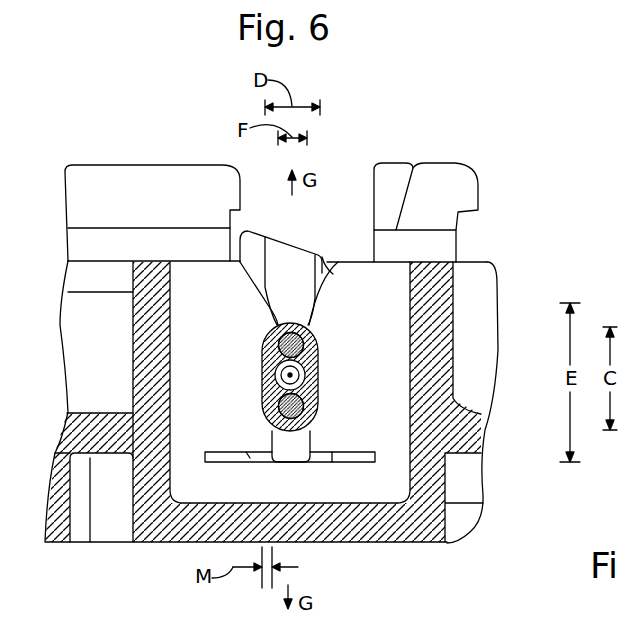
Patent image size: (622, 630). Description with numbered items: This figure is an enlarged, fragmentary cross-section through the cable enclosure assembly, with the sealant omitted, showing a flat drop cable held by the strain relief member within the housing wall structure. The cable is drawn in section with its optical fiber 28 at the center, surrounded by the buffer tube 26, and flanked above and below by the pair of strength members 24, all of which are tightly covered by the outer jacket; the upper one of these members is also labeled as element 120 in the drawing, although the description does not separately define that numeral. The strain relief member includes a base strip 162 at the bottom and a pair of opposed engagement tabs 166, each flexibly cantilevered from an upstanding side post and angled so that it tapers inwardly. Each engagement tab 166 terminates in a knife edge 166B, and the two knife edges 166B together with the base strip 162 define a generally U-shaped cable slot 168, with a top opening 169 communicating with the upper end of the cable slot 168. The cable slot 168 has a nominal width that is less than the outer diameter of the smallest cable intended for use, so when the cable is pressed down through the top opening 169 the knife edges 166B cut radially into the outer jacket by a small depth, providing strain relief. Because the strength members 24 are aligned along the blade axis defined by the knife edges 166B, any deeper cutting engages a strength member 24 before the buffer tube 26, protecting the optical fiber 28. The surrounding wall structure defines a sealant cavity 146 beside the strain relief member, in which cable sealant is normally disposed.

The base strip 162 is at (203, 490).
The engagement tab 166 is at (259, 272).
The knife edge 166B is at (270, 298).
The top opening 169 is at (289, 260).
The strength member 24 is at (264, 350).
The upper roller 120 is at (279, 342).
The buffer tube 26 is at (279, 402).
The optical fiber 28 is at (288, 375).
The cable slot 168 is at (290, 462).
The sealant cavity 146 is at (364, 390).